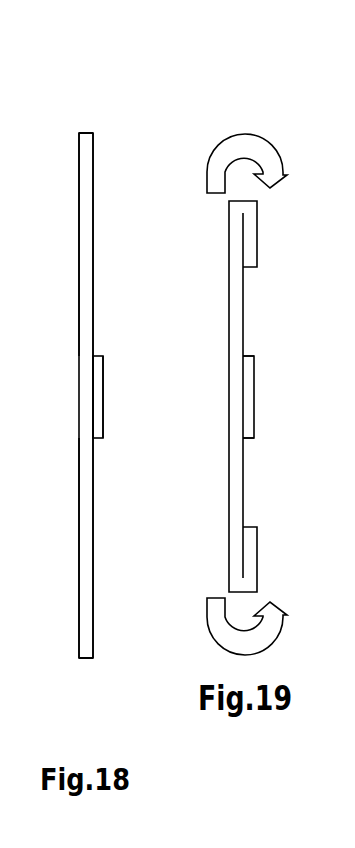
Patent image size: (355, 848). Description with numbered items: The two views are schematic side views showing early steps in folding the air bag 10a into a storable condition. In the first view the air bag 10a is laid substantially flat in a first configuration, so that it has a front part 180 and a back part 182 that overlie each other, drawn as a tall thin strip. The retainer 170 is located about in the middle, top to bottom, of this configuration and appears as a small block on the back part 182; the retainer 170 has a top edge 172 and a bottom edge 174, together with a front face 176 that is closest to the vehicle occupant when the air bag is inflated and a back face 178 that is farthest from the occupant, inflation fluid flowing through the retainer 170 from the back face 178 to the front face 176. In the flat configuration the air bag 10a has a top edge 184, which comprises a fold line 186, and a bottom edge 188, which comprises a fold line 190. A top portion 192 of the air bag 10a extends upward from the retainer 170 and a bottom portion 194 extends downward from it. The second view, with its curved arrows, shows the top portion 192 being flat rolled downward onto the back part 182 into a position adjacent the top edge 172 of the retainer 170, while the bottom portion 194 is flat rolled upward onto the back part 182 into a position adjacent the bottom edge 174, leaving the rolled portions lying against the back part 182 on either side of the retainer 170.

In FIG. 18, the air bag 10a is at (142, 137).
In FIG. 19, the air bag 10a is at (297, 146).
In FIG. 18, the retainer 170 is at (114, 408).
In FIG. 19, the retainer 170 is at (264, 402).
In FIG. 19, the top edge 172 is at (243, 355).
In FIG. 19, the bottom edge 174 is at (243, 438).
In FIG. 18, the front face 176 is at (93, 395).
In FIG. 18, the back face 178 is at (103, 377).
In FIG. 18, the front part 180 is at (79, 223).
In FIG. 19, the front part 180 is at (229, 312).
In FIG. 18, the back part 182 is at (93, 228).
In FIG. 19, the back part 182 is at (243, 310).
In FIG. 18, the top edge 184 is at (89, 132).
In FIG. 18, the fold line 186 is at (87, 132).
In FIG. 18, the bottom edge 188 is at (79, 658).
In FIG. 18, the fold line 190 is at (93, 658).
In FIG. 18, the top portion 192 is at (68, 320).
In FIG. 19, the top portion 192 is at (257, 223).
In FIG. 18, the bottom portion 194 is at (68, 530).
In FIG. 19, the bottom portion 194 is at (257, 547).